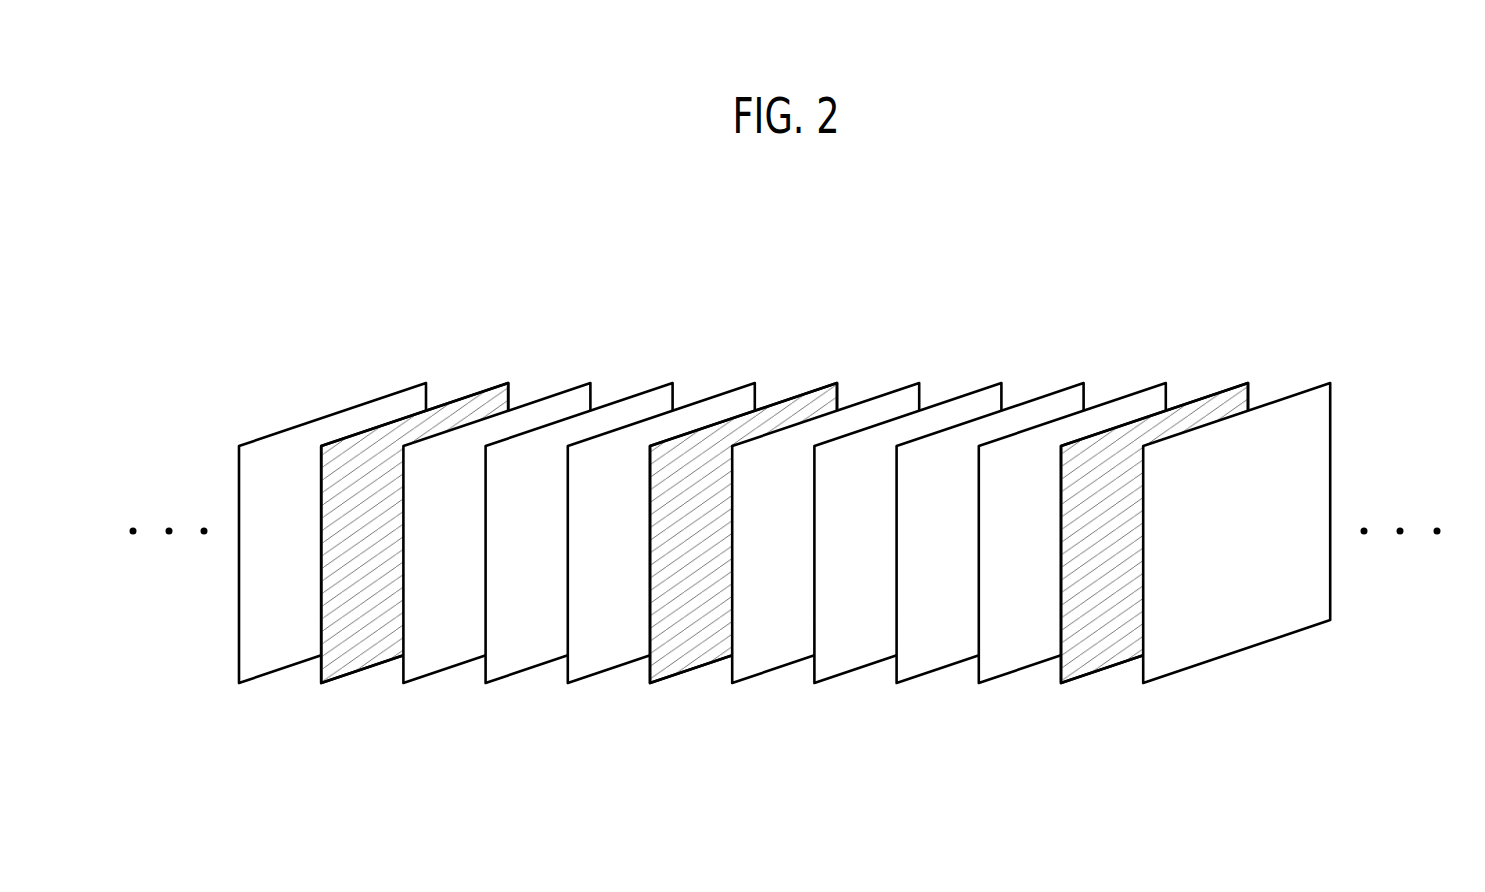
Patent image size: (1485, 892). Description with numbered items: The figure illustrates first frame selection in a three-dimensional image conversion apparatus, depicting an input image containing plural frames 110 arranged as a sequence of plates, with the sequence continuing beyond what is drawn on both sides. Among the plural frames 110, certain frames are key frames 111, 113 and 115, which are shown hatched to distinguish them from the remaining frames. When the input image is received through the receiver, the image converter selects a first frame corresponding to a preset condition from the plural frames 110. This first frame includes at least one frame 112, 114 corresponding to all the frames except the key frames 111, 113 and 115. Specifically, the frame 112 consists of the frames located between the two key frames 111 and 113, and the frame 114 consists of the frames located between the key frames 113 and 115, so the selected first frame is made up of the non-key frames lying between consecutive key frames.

The plural frames 110 is at (784, 555).
The key frame 111 is at (507, 383).
The frame 112 is at (754, 358).
The key frame 113 is at (836, 383).
The frame 114 is at (1165, 358).
The key frame 115 is at (1158, 500).